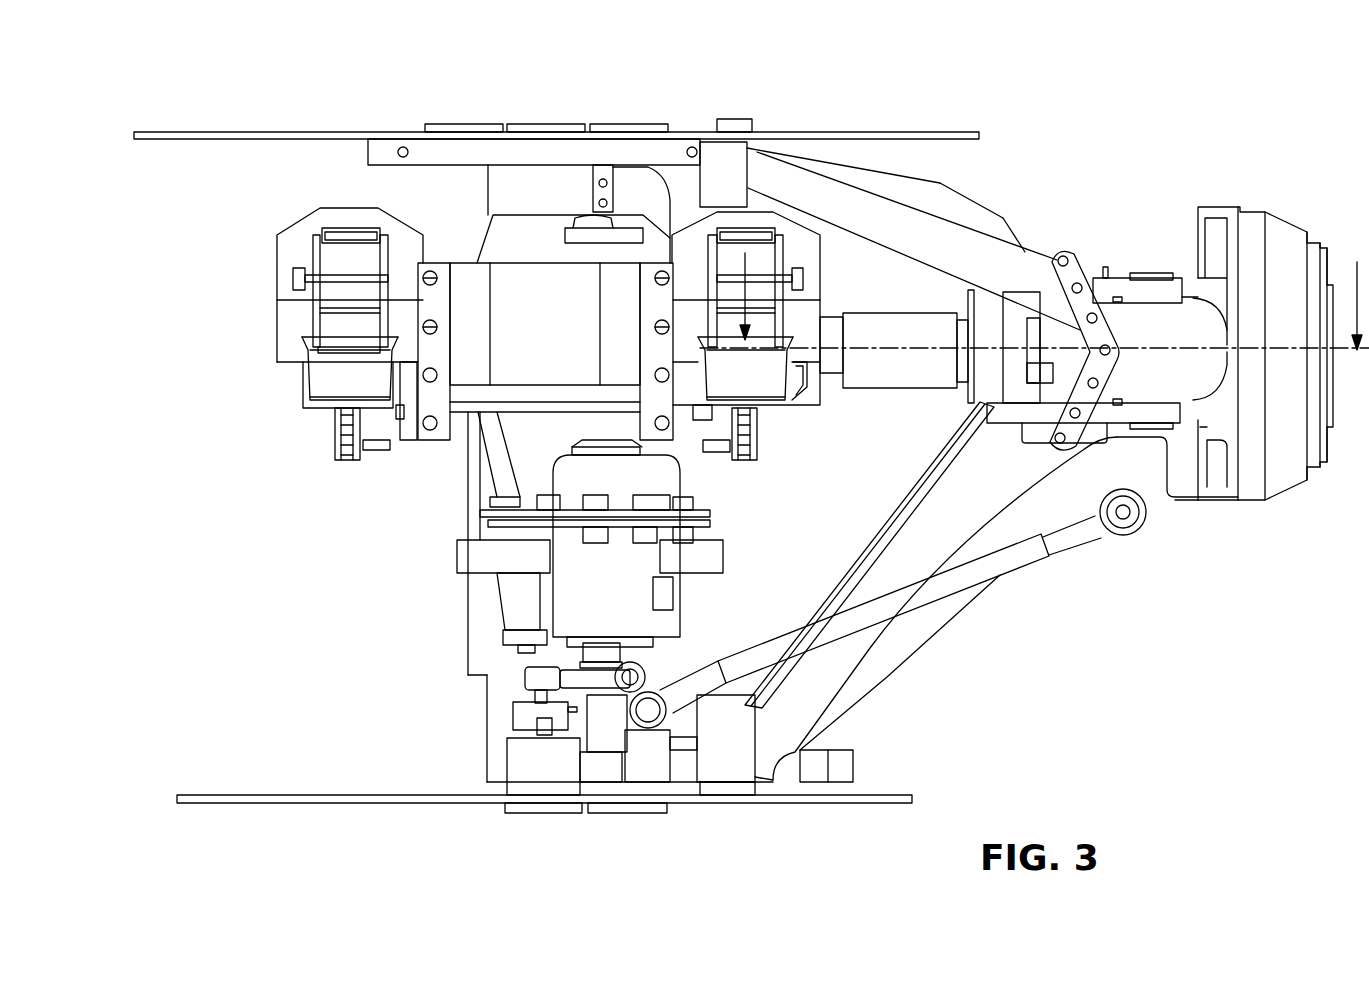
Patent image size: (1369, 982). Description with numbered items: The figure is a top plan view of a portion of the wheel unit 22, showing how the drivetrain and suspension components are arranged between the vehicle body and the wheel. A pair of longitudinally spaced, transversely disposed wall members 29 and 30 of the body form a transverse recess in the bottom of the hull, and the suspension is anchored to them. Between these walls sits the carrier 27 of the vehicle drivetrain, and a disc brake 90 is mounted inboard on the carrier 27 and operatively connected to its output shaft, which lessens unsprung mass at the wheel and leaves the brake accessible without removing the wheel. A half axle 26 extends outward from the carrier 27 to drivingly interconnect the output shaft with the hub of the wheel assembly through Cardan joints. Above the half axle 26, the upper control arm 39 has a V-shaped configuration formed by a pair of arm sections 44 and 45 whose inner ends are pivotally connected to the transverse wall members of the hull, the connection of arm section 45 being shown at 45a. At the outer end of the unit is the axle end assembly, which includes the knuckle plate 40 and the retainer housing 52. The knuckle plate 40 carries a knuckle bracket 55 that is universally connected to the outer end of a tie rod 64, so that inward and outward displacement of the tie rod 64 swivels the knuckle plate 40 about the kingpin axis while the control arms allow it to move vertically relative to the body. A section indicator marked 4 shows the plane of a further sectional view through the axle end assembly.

The wheel unit 22 is at (522, 106).
The transverse wall member 30 is at (300, 132).
The transverse wall member 29 is at (390, 803).
The carrier 27 is at (560, 337).
The half axle 26 is at (915, 373).
The disc brake 90 is at (767, 382).
The arm section 45 is at (1003, 222).
The pivot connection 45a is at (760, 121).
The arm section 44 is at (892, 522).
The tie rod 64 is at (967, 580).
The upper control arm 39 is at (822, 678).
The knuckle bracket 55 is at (1167, 498).
The knuckle plate 40 is at (1227, 500).
The retainer housing 52 is at (1288, 483).
The section line 4- 4 is at (1046, 296).